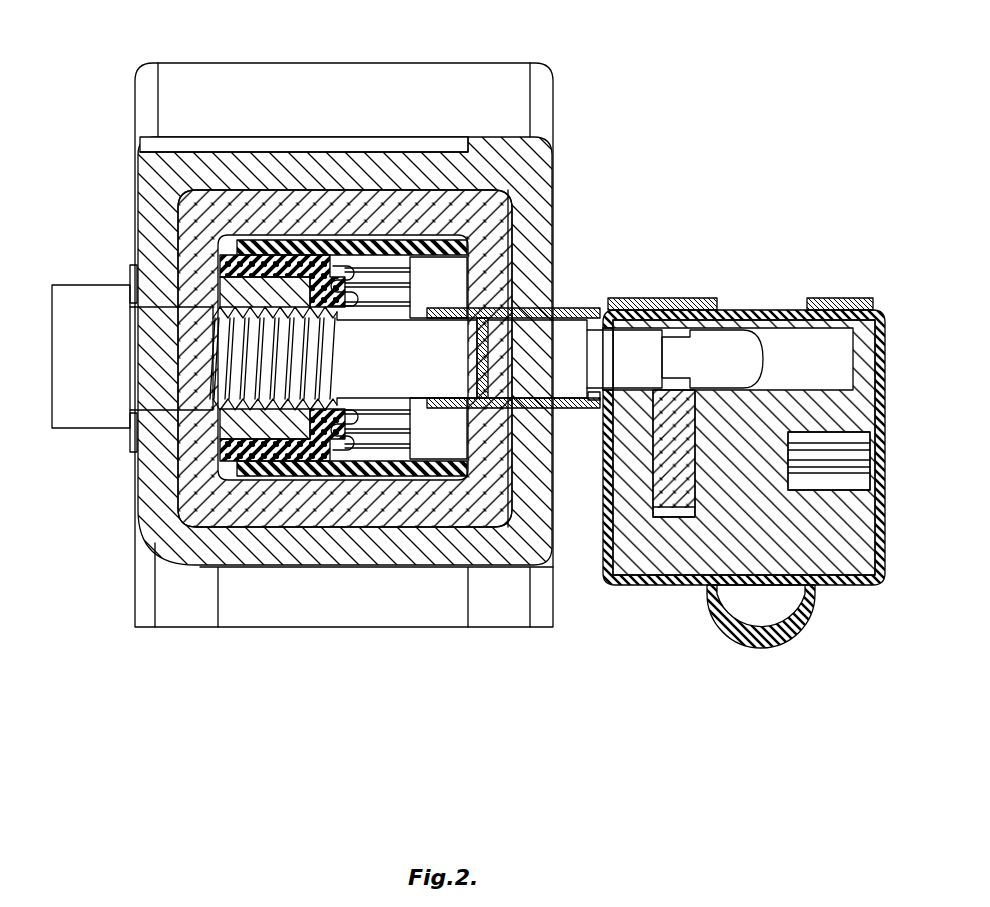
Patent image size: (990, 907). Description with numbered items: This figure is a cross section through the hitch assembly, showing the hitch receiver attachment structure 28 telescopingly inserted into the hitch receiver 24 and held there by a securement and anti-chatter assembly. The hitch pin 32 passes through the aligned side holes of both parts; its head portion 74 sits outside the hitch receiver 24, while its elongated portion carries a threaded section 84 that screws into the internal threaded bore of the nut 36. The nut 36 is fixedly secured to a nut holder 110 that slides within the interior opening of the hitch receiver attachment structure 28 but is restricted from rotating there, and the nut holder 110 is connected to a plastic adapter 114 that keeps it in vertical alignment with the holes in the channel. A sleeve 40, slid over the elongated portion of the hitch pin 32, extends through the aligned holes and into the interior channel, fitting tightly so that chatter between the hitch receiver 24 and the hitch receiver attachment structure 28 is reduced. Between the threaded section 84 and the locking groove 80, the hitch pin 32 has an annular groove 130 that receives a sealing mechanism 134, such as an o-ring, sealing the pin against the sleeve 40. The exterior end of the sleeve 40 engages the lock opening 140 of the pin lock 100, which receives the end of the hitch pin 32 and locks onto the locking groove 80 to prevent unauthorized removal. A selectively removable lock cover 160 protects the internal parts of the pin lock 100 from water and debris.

The hitch receiver 24 is at (153, 183).
The hitch receiver attachment structure 28 is at (497, 210).
The hitch pin 32 is at (52, 407).
The nut 36 is at (237, 277).
The sleeve 40 is at (597, 302).
The head portion 74 is at (98, 303).
The locking groove 80 is at (677, 330).
The threaded section 84 is at (237, 377).
The pin lock 100 is at (777, 310).
The nut holder 110 is at (278, 248).
The adapter 114 is at (390, 243).
The annular groove 130 is at (493, 350).
The sealing mechanism 134 is at (483, 410).
The lock opening 140 is at (832, 343).
The lock cover 160 is at (686, 588).